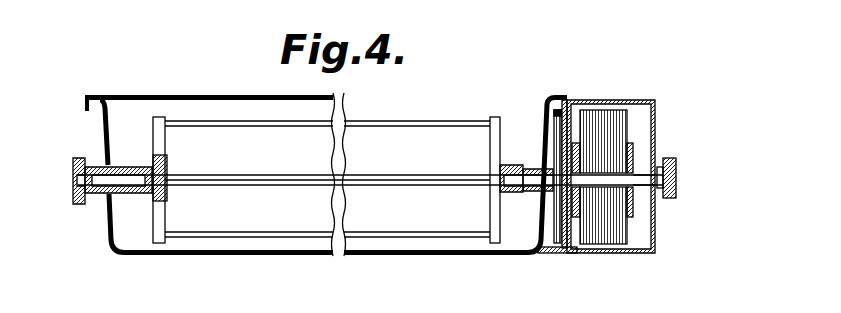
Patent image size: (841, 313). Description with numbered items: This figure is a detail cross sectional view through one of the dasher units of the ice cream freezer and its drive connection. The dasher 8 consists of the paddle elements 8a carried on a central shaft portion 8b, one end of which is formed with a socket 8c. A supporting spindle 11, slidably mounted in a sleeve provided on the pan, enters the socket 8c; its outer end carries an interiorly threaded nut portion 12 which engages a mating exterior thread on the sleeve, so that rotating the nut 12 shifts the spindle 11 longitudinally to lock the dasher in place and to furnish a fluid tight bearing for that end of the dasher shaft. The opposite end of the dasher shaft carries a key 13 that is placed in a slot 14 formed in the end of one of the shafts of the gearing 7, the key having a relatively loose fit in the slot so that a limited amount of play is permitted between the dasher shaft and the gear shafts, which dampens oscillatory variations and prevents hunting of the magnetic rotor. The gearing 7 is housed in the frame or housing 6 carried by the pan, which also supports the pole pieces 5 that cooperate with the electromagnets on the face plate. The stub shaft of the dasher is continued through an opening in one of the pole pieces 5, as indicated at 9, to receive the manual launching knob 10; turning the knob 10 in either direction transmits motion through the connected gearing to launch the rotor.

The pole pieces 5 is at (608, 240).
The frame or housing 6 is at (558, 255).
The gearing 7 is at (551, 240).
The dasher 8 is at (326, 180).
The dasher or paddle elements 8a is at (271, 227).
The central shaft portion 8b is at (237, 186).
The socket 8c is at (157, 188).
The shaft 9 is at (643, 168).
The manual launching knob 10 is at (675, 182).
The supporting spindle 11 is at (118, 176).
The nut portion 12 is at (76, 182).
The key 13 is at (507, 168).
The slot 14 is at (512, 192).